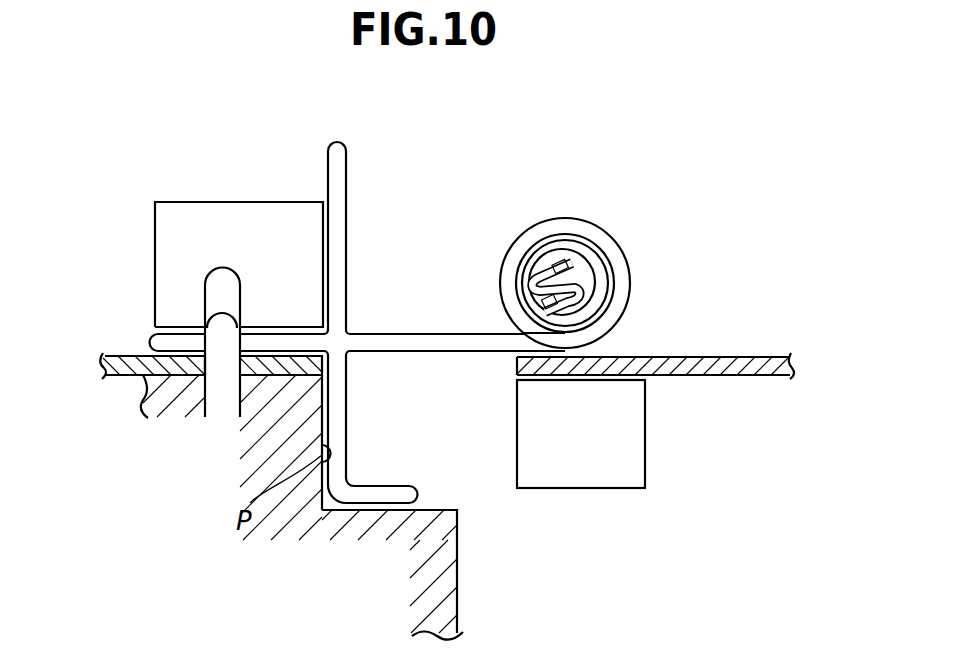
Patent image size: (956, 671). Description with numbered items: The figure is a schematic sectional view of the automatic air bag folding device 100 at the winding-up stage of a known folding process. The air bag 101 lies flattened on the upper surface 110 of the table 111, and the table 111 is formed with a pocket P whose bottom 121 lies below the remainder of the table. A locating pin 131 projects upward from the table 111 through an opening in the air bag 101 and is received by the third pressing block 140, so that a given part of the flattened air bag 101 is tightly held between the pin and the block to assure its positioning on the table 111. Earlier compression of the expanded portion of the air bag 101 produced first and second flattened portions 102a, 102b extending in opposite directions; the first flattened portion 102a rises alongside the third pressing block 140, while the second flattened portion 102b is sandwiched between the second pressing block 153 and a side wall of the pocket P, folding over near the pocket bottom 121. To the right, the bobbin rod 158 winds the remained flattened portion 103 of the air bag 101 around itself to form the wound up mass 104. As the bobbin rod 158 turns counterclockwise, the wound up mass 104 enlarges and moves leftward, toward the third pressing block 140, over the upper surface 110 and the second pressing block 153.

The automatic air bag folding device 100 is at (572, 150).
The air bag 101 is at (441, 299).
The first flattened portion 102a is at (347, 170).
The second flattened portion 102b is at (390, 487).
The remained flattened portion 103 is at (429, 333).
The wound up mass 104 is at (560, 218).
The upper surface 110 is at (695, 355).
The table 111 is at (128, 365).
The bottom of table pocket 121 is at (437, 510).
The locating pin 131 is at (218, 305).
The third pressing block 140 is at (227, 200).
The second pressing block 153 is at (618, 454).
The bobbin rod 158 is at (587, 252).